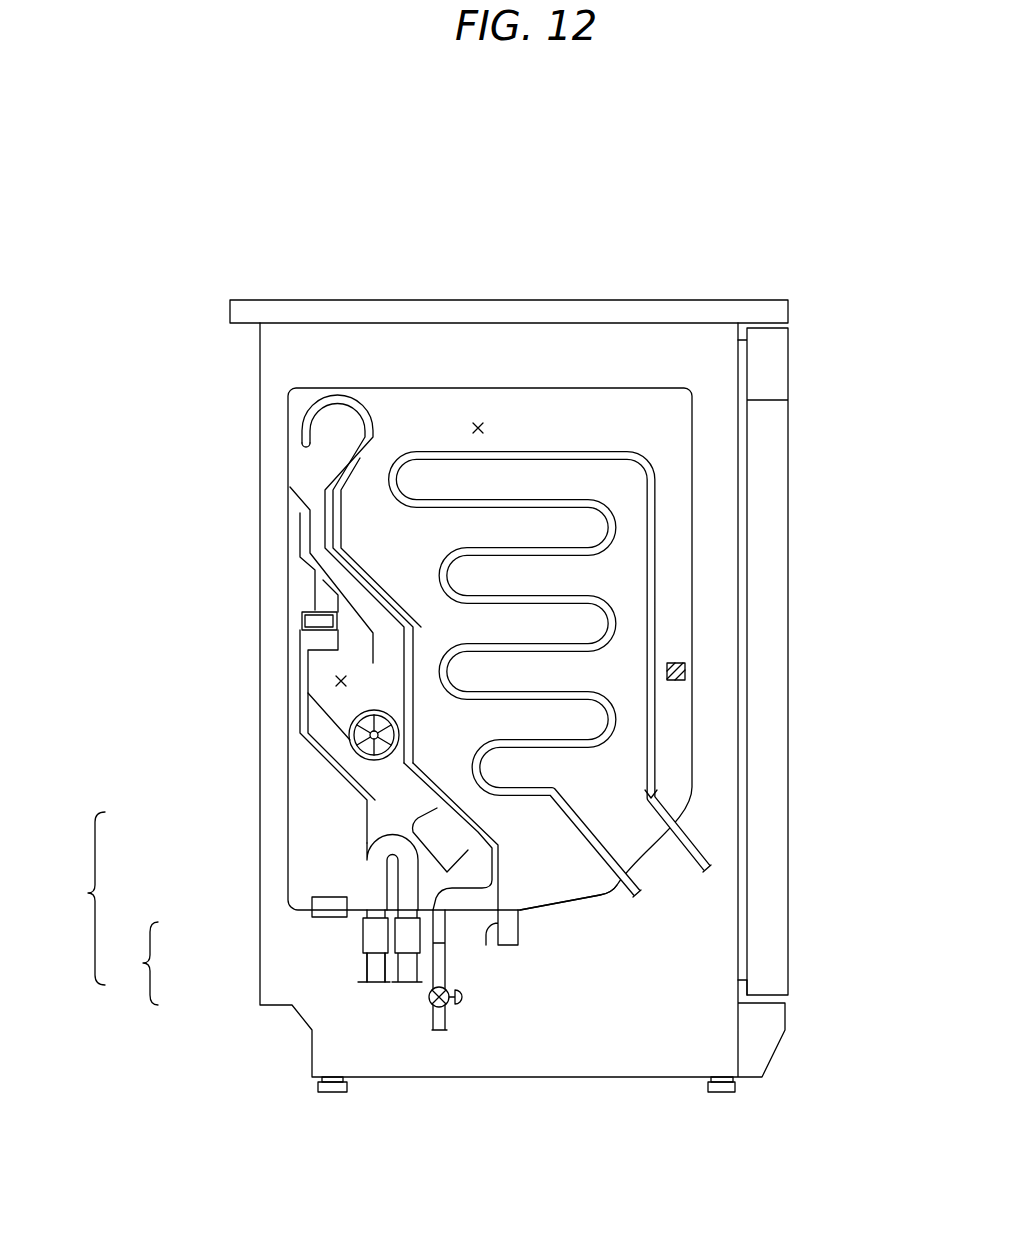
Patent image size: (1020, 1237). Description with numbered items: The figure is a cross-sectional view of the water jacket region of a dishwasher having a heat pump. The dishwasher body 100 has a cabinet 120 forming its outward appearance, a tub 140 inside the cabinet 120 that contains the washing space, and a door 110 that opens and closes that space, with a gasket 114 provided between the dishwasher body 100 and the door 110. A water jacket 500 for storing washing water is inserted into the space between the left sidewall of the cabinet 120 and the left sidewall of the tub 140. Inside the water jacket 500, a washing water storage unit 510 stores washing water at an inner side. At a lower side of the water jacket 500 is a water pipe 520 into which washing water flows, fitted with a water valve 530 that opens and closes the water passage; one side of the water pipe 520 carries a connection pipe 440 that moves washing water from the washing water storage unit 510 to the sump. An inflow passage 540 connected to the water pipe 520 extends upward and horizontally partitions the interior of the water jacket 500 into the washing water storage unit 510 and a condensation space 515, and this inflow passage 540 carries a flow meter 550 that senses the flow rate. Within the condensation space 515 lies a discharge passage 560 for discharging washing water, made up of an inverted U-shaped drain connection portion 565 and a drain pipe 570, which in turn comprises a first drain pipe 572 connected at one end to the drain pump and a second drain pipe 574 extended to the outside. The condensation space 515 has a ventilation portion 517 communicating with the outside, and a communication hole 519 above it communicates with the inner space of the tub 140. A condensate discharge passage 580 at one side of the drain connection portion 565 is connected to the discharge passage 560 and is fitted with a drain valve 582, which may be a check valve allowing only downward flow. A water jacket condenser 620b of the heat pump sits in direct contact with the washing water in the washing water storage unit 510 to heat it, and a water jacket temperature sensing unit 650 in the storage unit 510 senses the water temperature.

The dishwasher body 100 is at (395, 220).
The door 110 is at (775, 430).
The gasket 114 is at (745, 913).
The cabinet 120 is at (608, 295).
The tub 140 is at (667, 370).
The connection pipe 440 is at (492, 950).
The water jacket 500 is at (597, 905).
The washing water storage unit 510 is at (478, 421).
The condensation space 515 is at (338, 681).
The ventilation portion 517 is at (325, 900).
The communication hole 519 is at (350, 737).
The water pipe 520 is at (432, 1015).
The water valve 530 is at (449, 1008).
The inflow passage 540 is at (323, 483).
The flow meter 550 is at (432, 828).
The discharge passage 560 is at (79, 898).
The drain connection portion 565 is at (375, 858).
The drain pipe 570 is at (130, 963).
The first drain pipe 572 is at (380, 972).
The second drain pipe 574 is at (368, 962).
The condensate discharge passage 580 is at (323, 760).
The drain valve 582 is at (305, 621).
The water jacket condenser 620b is at (662, 755).
The water jacket temperature sensing unit 650 is at (685, 671).